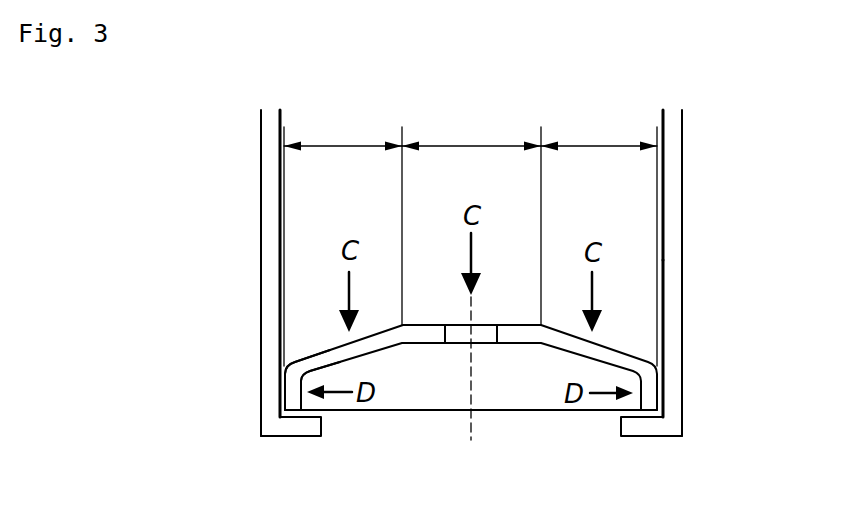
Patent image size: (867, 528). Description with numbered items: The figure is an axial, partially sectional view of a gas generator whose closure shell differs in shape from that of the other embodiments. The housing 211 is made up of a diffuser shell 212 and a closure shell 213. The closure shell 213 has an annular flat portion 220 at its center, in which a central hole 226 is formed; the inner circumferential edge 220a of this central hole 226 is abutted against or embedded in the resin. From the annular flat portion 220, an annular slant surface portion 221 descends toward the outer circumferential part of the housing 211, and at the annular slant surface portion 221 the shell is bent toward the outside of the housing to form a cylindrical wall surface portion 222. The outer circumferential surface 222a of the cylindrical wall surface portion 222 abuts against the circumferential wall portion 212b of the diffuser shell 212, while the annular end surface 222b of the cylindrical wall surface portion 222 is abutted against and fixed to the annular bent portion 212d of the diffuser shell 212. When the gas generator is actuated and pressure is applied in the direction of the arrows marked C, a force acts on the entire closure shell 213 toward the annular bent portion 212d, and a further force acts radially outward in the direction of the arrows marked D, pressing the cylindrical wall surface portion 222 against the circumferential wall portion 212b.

The housing 211 is at (777, 253).
The diffuser shell 212 is at (683, 255).
The circumferential wall portion 212b is at (683, 390).
The annular bent portion 212d is at (643, 437).
The closure shell 213 is at (617, 350).
The annular flat portion 220 is at (471, 219).
The inner circumferential edge 220a is at (448, 334).
The annular slant surface portion 221 is at (470, 239).
The cylindrical wall surface portion 222 is at (142, 408).
The outer circumferential surface 222a is at (284, 382).
The annular end surface 222b is at (290, 412).
The central hole 226 is at (484, 325).